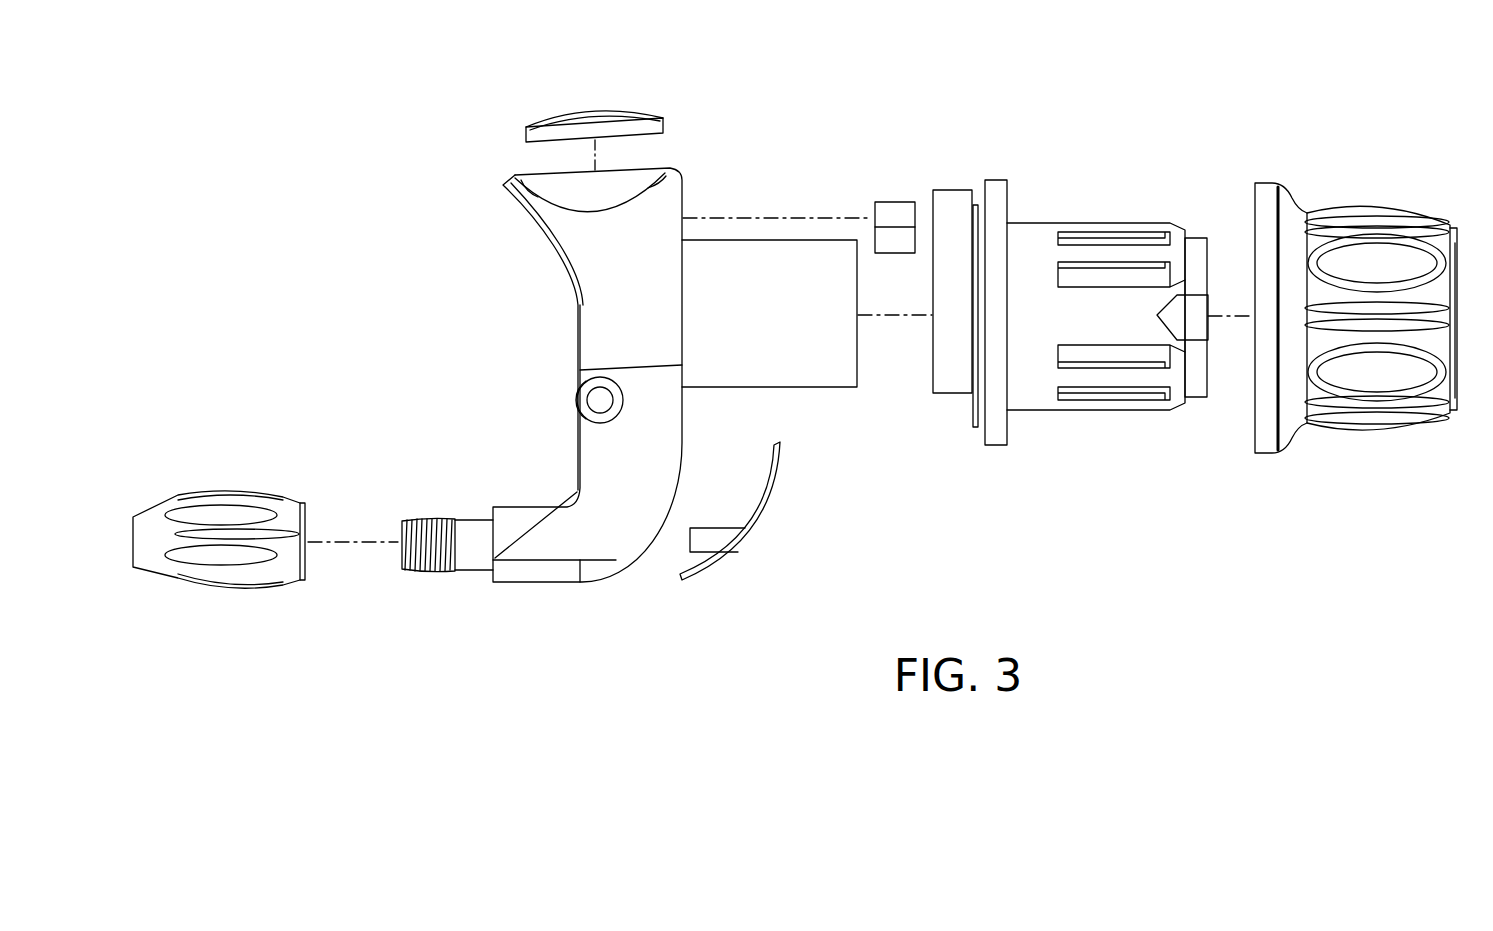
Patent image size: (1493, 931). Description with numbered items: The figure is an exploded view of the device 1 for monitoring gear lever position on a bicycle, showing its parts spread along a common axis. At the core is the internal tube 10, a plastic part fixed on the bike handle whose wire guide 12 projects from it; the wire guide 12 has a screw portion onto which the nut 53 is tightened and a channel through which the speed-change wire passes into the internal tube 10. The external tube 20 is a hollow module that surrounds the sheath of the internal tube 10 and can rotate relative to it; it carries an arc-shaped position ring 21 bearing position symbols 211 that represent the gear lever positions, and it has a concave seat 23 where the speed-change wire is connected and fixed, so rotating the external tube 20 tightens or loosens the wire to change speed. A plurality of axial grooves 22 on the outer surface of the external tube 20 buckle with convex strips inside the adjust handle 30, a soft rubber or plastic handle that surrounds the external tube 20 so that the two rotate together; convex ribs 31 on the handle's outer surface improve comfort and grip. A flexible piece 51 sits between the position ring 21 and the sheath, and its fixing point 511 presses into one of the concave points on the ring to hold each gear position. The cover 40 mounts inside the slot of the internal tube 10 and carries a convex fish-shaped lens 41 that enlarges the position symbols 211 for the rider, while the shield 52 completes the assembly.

The device for monitoring gear lever position 1 is at (383, 186).
The internal tube 10 is at (755, 144).
The wire guide 12 is at (473, 563).
The external tube 20 is at (1096, 174).
The position ring 21 is at (960, 200).
The position symbols 211 is at (950, 297).
The axial grooves 22 is at (1143, 272).
The concave seat 23 is at (1173, 327).
The adjust handle 30 is at (1398, 196).
The convex ribs 31 is at (1362, 423).
The cover 40 is at (568, 115).
The fish-shaped lens 41 is at (628, 112).
The flexible piece 51 is at (908, 218).
The fixing point 511 is at (878, 200).
The shield 52 is at (742, 542).
The nut 53 is at (253, 580).